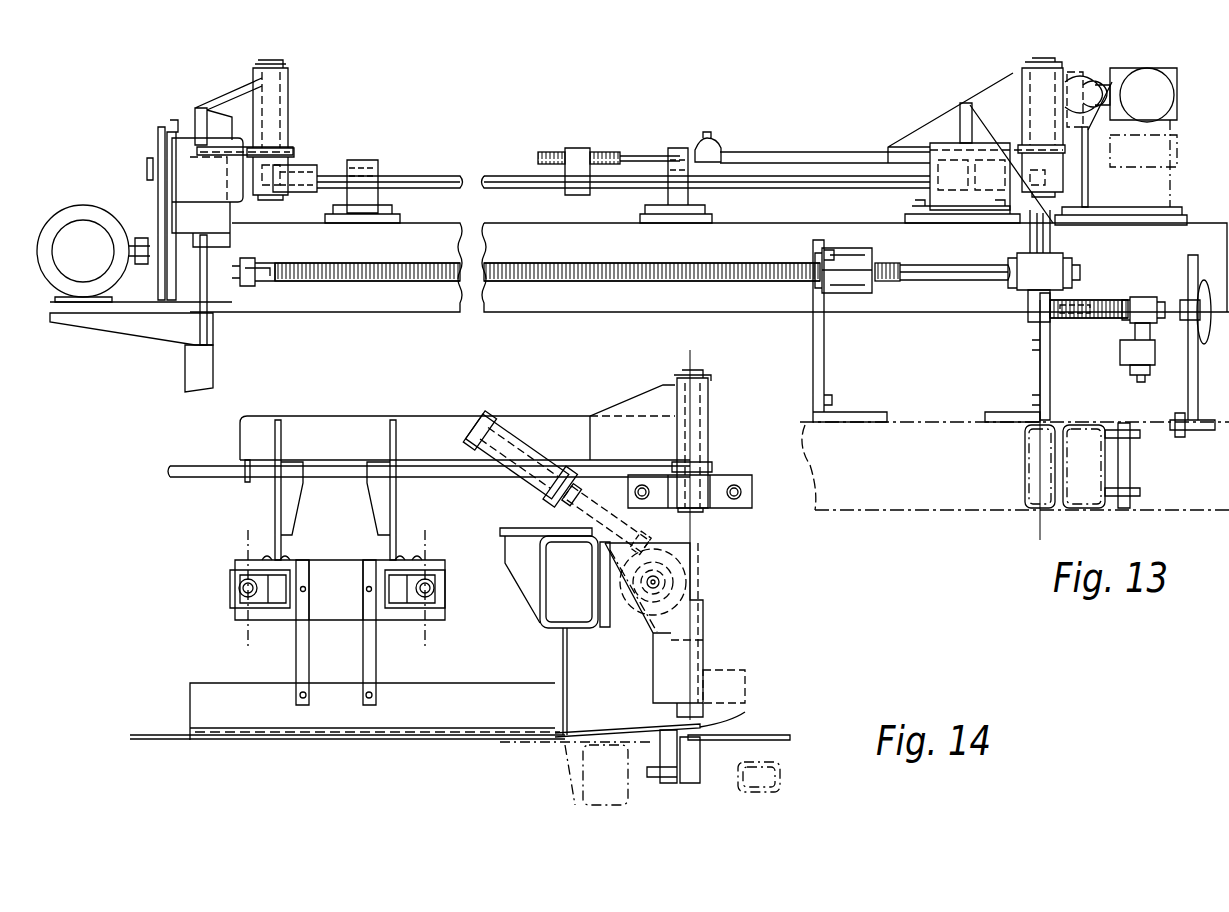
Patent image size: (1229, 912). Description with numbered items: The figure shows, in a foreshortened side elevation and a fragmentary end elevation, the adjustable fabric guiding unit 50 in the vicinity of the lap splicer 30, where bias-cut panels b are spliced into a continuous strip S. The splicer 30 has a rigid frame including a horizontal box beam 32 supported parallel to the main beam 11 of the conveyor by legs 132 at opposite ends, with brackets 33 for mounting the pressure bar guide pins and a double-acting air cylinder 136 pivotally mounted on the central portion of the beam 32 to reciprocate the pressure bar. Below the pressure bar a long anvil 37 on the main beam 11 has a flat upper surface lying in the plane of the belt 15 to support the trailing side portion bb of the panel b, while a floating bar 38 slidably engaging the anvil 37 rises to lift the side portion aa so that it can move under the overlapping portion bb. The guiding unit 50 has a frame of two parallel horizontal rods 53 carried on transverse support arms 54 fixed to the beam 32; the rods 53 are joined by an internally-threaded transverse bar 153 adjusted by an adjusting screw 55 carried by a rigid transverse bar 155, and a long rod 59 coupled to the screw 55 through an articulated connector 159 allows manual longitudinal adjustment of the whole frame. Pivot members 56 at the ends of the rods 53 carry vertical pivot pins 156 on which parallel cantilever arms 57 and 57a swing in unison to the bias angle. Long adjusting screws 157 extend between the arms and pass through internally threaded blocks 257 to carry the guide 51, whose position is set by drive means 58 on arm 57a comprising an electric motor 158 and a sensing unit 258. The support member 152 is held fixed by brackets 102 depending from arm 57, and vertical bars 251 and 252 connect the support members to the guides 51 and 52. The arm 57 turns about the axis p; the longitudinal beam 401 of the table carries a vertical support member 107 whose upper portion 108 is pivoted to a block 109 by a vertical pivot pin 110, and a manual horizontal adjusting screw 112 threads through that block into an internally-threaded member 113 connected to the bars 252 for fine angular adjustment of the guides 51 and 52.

In FIG. 13, the main beam 11 is at (870, 512).
In FIG. 14, the main beam 11 is at (583, 770).
In FIG. 14, the conveyor belt 15 is at (772, 742).
In FIG. 14, the lap splicer 30 is at (705, 576).
In FIG. 13, the horizontal box beam 32 is at (530, 310).
In FIG. 14, the horizontal box beam 32 is at (540, 595).
In FIG. 14, the brackets 33 is at (620, 655).
In FIG. 14, the anvil 37 is at (688, 783).
In FIG. 14, the floating bar 38 is at (668, 765).
In FIG. 13, the adjustable fabric guiding unit 50 is at (197, 101).
In FIG. 14, the adjustable fabric guiding unit 50 is at (487, 406).
In FIG. 13, the guide 51 is at (805, 393).
In FIG. 13, the guide 52 is at (1008, 410).
In FIG. 14, the guide 52 is at (192, 682).
In FIG. 13, the horizontal rods 53 is at (495, 176).
In FIG. 13, the transverse support arms 54 is at (365, 160).
In FIG. 13, the adjusting screw 55 is at (615, 160).
In FIG. 13, the pivot members 56 is at (305, 162).
In FIG. 14, the pivot members 56 is at (725, 475).
In FIG. 13, the cantilever arm 57 is at (987, 98).
In FIG. 14, the cantilever arm 57 is at (405, 418).
In FIG. 13, the cantilever arm 57a is at (240, 93).
In FIG. 13, the drive means 58 is at (155, 200).
In FIG. 13, the long rod 59 is at (800, 150).
In FIG. 14, the long rod 59 is at (200, 463).
In FIG. 13, the brackets 102 is at (1012, 212).
In FIG. 14, the brackets 102 is at (396, 470).
In FIG. 13, the vertical support member 107 is at (1130, 470).
In FIG. 13, the upper portion 108 is at (1130, 355).
In FIG. 13, the block 109 is at (1140, 297).
In FIG. 13, the vertical pivot pin 110 is at (1138, 370).
In FIG. 13, the horizontal adjusting screw 112 is at (1105, 298).
In FIG. 13, the internally-threaded member 113 is at (1095, 320).
In FIG. 13, the legs 132 is at (1195, 378).
In FIG. 14, the legs 132 is at (563, 652).
In FIG. 14, the double-acting air cylinder 136 is at (505, 482).
In FIG. 13, the support member 152 is at (1050, 260).
In FIG. 14, the support member 152 is at (345, 560).
In FIG. 13, the internally-threaded transverse bar 153 is at (575, 148).
In FIG. 13, the rigid transverse bar 155 is at (688, 195).
In FIG. 13, the vertical pivot pins 156 is at (288, 105).
In FIG. 14, the vertical pivot pins 156 is at (692, 372).
In FIG. 13, the long adjusting screws 157 is at (370, 268).
In FIG. 14, the long adjusting screws 157 is at (243, 590).
In FIG. 13, the electric motor 158 is at (83, 212).
In FIG. 13, the articulated connector 159 is at (720, 150).
In FIG. 13, the vertical bars 251 is at (824, 345).
In FIG. 13, the vertical bars 252 is at (1040, 345).
In FIG. 14, the vertical bars 252 is at (296, 652).
In FIG. 14, the blocks 257 is at (232, 582).
In FIG. 13, the sensing unit 258 is at (218, 198).
In FIG. 13, the longitudinal beam 401 is at (1095, 510).
In FIG. 13, the axis p is at (1040, 520).
In FIG. 14, the axis p is at (690, 535).
In FIG. 14, the continuous strip S is at (152, 730).
In FIG. 14, the bias-cut panel b is at (600, 730).
In FIG. 14, the side portion aa is at (705, 730).
In FIG. 14, the trailing side portion bb is at (697, 755).